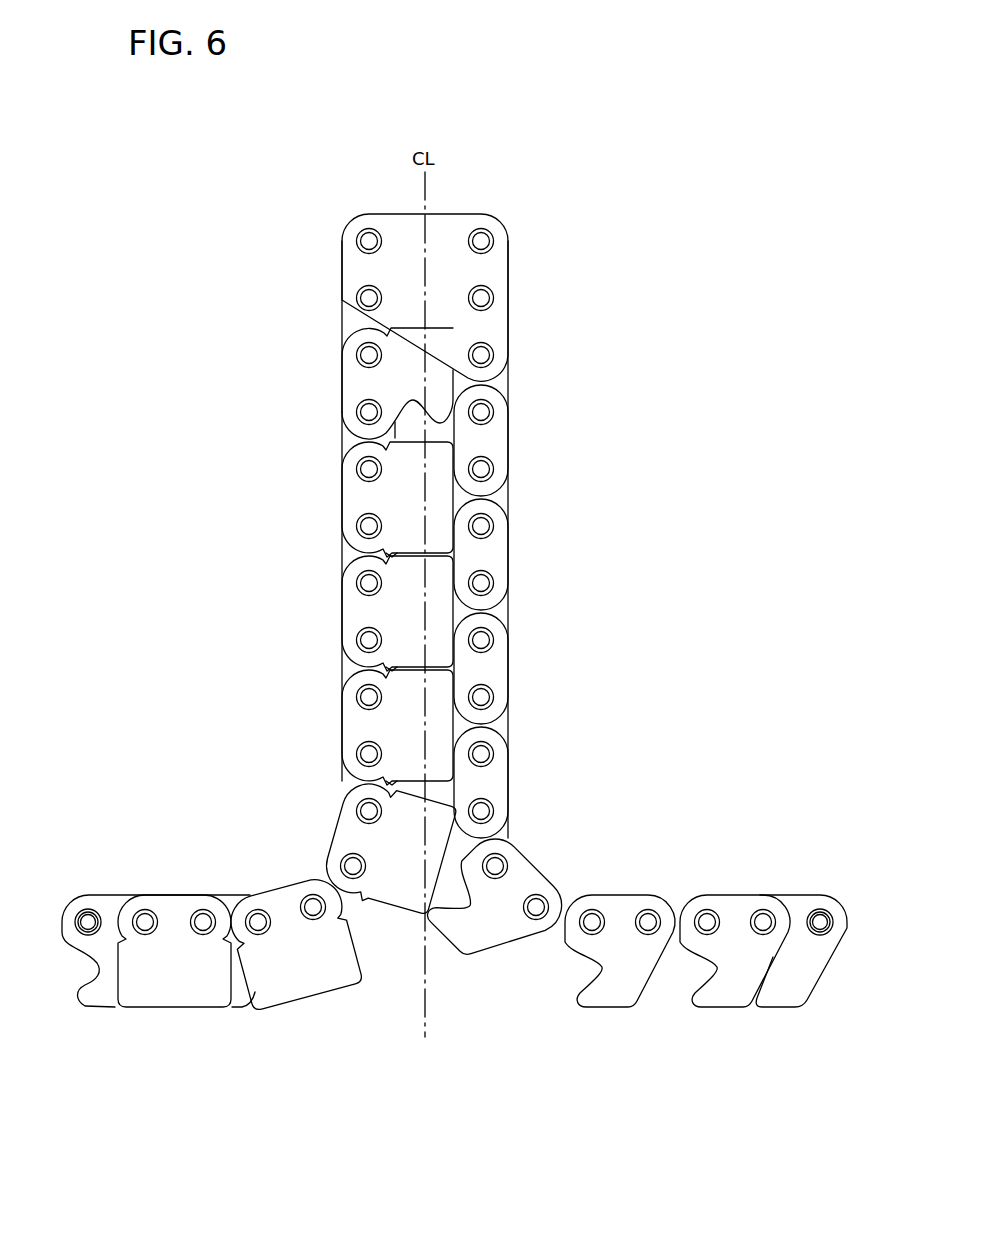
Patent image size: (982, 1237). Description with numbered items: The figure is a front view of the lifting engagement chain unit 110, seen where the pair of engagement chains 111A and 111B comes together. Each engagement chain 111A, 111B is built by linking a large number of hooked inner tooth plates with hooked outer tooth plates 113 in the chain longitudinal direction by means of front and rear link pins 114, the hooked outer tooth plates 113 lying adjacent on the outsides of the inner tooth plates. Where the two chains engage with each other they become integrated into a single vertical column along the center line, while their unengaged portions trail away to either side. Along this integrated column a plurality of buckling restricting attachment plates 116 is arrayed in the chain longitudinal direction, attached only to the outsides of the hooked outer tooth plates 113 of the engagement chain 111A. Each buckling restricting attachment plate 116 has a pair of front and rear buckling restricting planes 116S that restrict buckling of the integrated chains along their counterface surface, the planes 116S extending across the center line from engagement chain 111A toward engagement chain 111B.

The lifting engagement chain unit 110 is at (454, 670).
The engagement chain 111A is at (245, 1028).
The engagement chain 111B is at (631, 958).
The hooked outer tooth plate 113 is at (360, 385).
The link pin 114 is at (357, 697).
The buckling restricting attachment plate 116 is at (360, 495).
The buckling restricting plane 116S is at (410, 550).